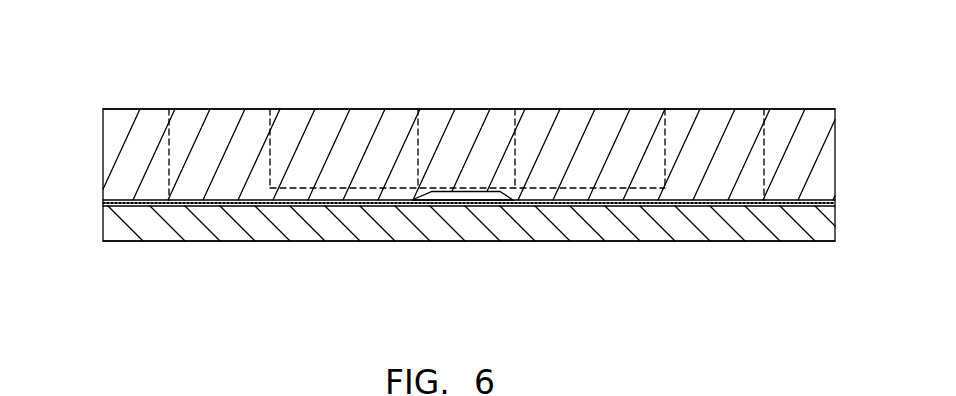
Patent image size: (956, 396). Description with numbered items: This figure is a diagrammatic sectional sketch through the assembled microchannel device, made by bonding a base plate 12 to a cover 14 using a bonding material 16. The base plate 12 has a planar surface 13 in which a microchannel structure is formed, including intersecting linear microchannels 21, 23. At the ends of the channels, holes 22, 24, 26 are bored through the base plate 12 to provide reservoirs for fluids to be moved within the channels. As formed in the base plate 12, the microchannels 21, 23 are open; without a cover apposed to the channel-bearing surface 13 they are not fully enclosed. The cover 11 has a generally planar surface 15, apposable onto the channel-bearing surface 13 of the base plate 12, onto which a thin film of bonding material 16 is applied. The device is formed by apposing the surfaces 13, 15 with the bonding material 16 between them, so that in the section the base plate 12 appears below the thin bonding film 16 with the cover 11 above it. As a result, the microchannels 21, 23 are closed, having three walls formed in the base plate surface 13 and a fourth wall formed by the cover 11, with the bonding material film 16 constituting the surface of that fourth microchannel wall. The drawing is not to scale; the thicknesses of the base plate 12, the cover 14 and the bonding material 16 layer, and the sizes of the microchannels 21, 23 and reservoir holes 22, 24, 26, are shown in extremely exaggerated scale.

The cover 11 is at (436, 273).
The base plate 12 is at (593, 110).
The planar surface 13 is at (790, 208).
The cover 14 is at (303, 242).
The planar surface 15 is at (118, 201).
The bonding material 16 is at (152, 207).
The microchannel 21 is at (455, 191).
The hole 22 is at (515, 125).
The microchannel 23 is at (310, 187).
The hole 24 is at (170, 114).
The hole 26 is at (763, 127).